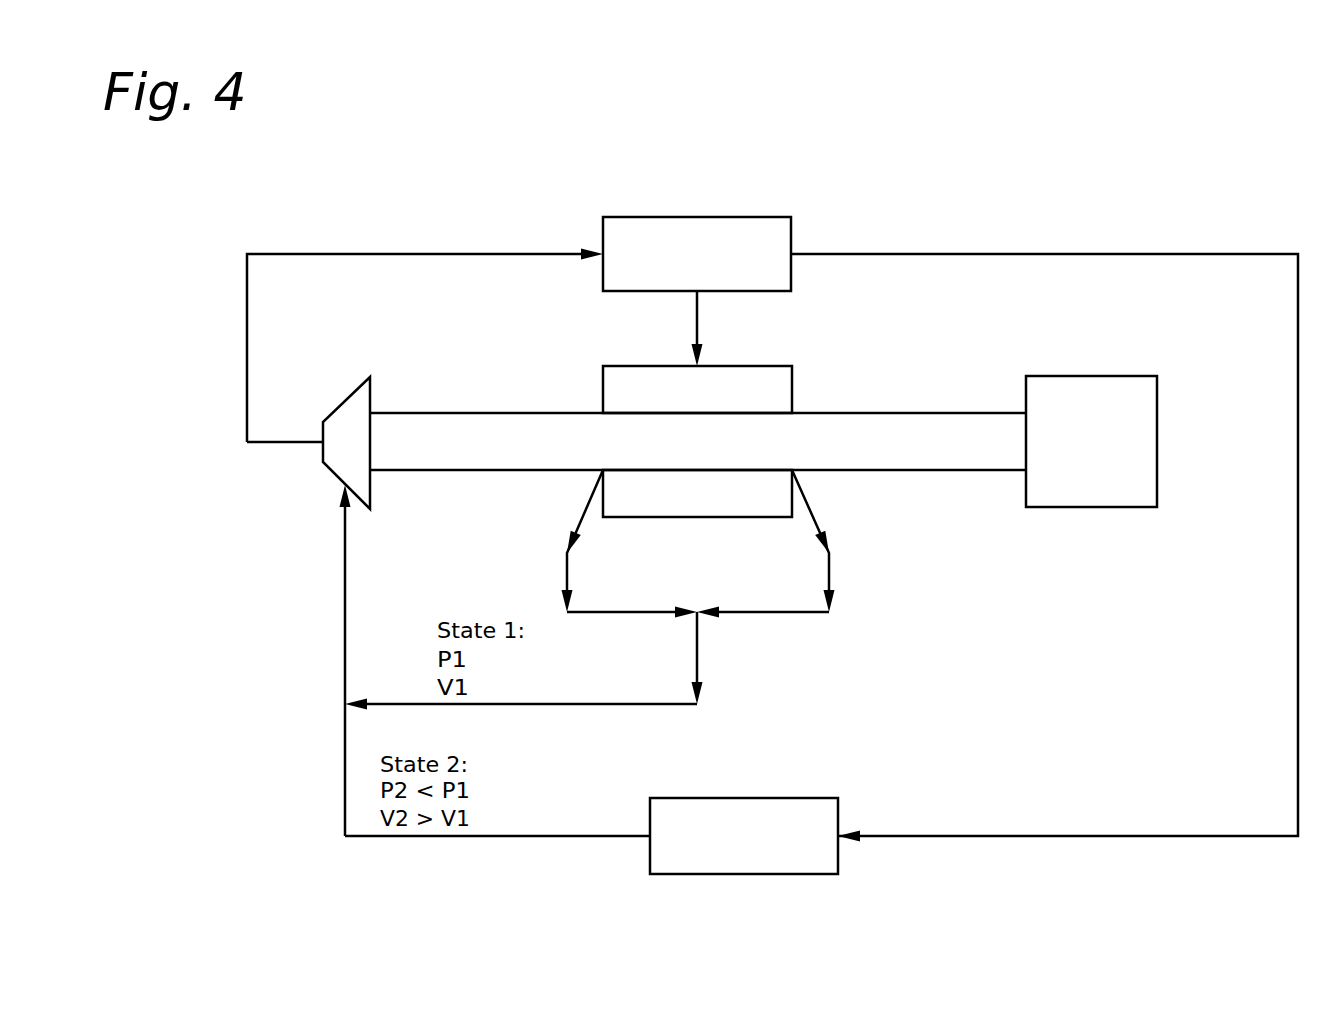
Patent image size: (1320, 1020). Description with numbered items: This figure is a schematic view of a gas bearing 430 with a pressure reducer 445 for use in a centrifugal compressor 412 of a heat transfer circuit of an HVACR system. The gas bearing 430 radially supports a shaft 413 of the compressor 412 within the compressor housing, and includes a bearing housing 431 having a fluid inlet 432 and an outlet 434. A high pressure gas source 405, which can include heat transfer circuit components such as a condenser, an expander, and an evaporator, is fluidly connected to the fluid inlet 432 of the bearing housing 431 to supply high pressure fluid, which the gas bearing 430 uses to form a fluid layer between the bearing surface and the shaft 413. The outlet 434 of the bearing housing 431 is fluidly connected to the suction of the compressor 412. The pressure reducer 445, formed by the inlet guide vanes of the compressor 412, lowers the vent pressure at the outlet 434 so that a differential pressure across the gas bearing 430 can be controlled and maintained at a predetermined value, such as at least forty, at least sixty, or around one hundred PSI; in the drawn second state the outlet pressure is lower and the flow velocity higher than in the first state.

The high pressure gas source 405 is at (657, 217).
The compressor 412 is at (1135, 342).
The shaft 413 is at (512, 413).
The gas bearing 430 is at (778, 366).
The bearing housing 431 is at (752, 517).
The fluid inlet 432 is at (697, 365).
The outlet 434 is at (603, 470).
The pressure reducer 445 is at (808, 798).